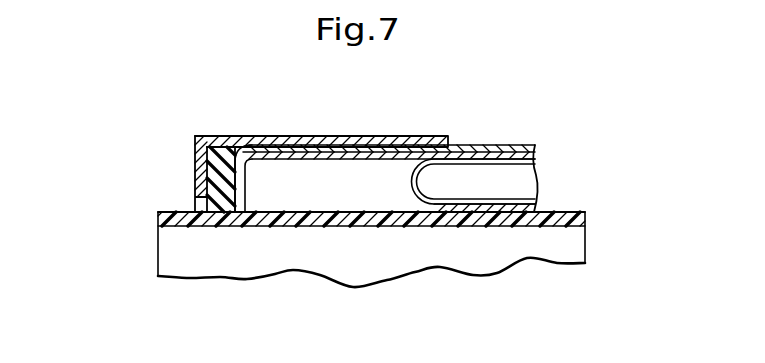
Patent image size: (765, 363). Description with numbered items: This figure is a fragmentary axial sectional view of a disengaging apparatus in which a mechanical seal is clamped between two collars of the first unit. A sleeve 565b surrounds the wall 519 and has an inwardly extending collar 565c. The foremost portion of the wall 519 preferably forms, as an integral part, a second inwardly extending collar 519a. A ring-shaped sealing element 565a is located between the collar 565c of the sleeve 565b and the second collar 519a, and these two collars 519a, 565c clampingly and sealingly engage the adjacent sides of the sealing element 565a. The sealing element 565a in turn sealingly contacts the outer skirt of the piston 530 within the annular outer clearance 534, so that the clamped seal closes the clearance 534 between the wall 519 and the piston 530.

The piston 530 is at (600, 235).
The sleeve 565b is at (397, 136).
The inwardly extending collar of the sleeve 565c is at (194, 175).
The ring-shaped sealing element 565a is at (236, 136).
The wall 519 is at (510, 143).
The second inwardly extending collar 519a is at (243, 178).
The annular outer clearance 534 is at (383, 187).